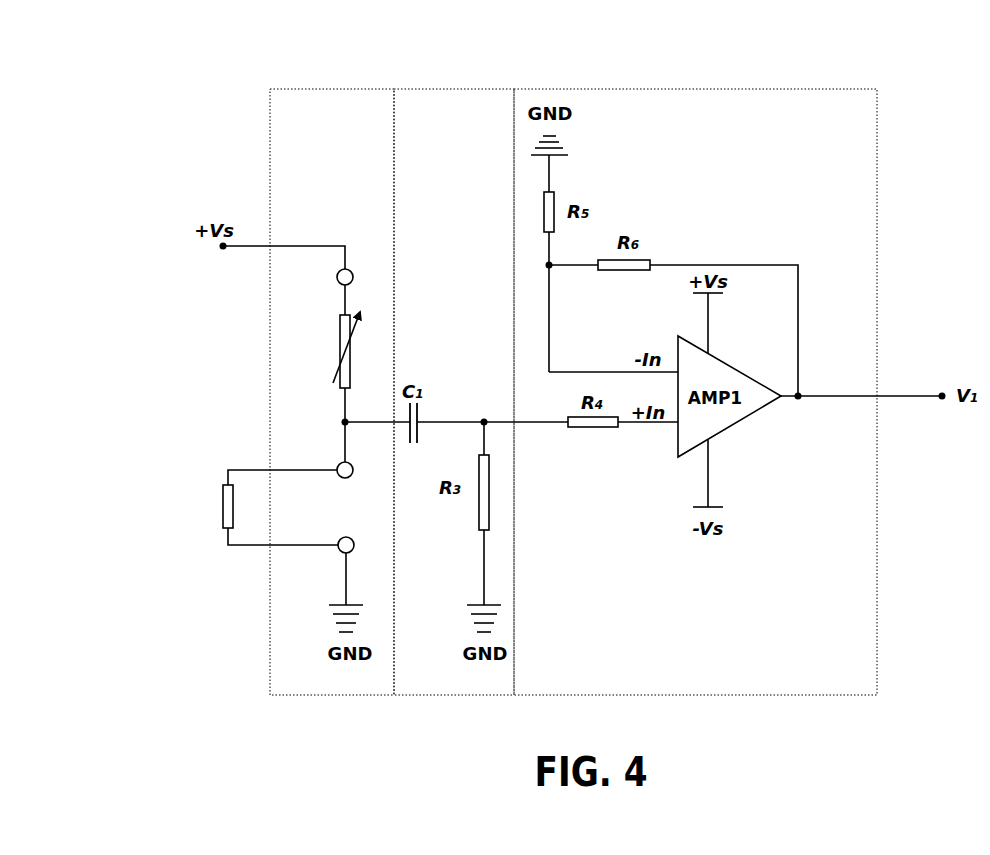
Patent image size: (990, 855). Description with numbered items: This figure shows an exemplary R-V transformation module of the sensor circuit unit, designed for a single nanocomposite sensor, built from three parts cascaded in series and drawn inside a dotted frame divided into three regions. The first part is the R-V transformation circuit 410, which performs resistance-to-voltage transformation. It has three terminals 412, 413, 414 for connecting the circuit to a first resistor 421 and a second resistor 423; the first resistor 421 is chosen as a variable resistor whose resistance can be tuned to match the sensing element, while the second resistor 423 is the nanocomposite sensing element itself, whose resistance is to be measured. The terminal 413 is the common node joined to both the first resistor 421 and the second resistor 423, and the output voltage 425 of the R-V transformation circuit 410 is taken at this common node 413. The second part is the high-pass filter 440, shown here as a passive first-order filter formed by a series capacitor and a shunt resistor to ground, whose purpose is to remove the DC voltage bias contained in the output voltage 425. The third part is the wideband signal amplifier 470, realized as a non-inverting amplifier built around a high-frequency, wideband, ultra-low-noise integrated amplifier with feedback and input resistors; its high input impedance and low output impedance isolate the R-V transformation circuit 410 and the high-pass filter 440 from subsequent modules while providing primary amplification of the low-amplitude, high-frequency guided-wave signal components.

The R-V transformation circuit 410 is at (285, 384).
The terminal 412 is at (299, 297).
The terminal (common node) 413 is at (305, 445).
The terminal 414 is at (305, 576).
The first resistor 421 is at (273, 357).
The second resistor 423 is at (160, 492).
The output voltage 425 is at (369, 386).
The high-pass filter 440 is at (462, 367).
The wideband signal amplifier 470 is at (695, 366).